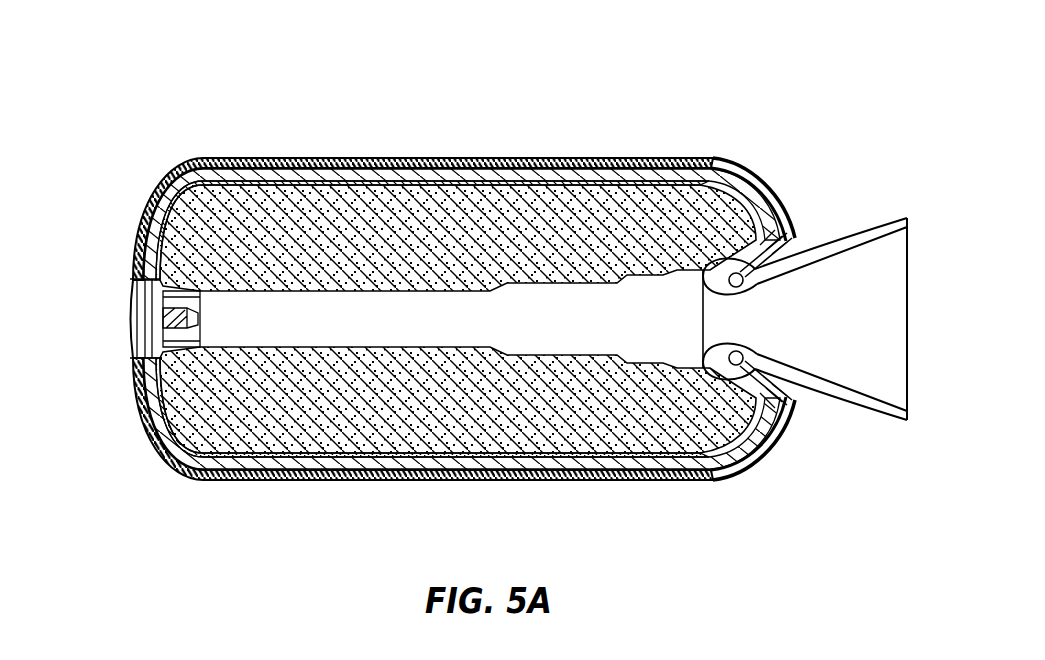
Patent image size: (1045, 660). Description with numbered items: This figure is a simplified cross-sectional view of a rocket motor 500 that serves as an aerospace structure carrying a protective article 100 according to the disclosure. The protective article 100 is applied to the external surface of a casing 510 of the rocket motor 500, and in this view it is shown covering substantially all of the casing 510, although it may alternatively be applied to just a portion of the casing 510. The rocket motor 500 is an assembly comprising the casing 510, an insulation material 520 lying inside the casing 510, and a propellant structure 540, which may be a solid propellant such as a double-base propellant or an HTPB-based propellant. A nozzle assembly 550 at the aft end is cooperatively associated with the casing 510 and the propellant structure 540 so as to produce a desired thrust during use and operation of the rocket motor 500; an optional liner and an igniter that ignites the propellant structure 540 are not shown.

The rocket motor 500 is at (112, 153).
The casing 510 is at (303, 172).
The insulation material 520 is at (375, 182).
The propellant structure 540 is at (520, 432).
The nozzle assembly 550 is at (848, 237).
The protective article 100 is at (477, 160).